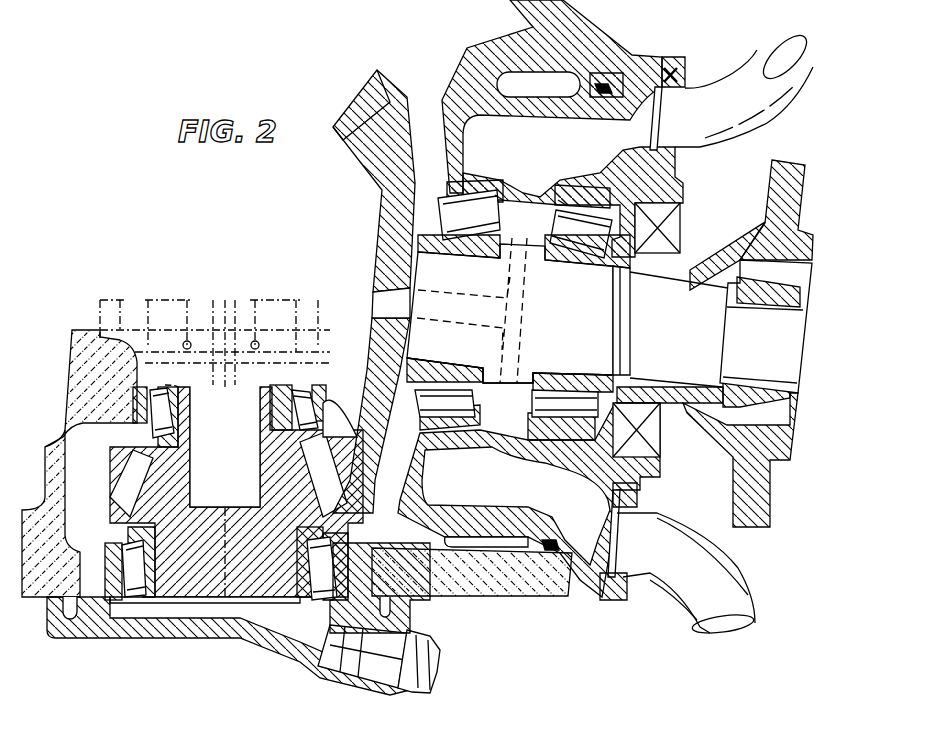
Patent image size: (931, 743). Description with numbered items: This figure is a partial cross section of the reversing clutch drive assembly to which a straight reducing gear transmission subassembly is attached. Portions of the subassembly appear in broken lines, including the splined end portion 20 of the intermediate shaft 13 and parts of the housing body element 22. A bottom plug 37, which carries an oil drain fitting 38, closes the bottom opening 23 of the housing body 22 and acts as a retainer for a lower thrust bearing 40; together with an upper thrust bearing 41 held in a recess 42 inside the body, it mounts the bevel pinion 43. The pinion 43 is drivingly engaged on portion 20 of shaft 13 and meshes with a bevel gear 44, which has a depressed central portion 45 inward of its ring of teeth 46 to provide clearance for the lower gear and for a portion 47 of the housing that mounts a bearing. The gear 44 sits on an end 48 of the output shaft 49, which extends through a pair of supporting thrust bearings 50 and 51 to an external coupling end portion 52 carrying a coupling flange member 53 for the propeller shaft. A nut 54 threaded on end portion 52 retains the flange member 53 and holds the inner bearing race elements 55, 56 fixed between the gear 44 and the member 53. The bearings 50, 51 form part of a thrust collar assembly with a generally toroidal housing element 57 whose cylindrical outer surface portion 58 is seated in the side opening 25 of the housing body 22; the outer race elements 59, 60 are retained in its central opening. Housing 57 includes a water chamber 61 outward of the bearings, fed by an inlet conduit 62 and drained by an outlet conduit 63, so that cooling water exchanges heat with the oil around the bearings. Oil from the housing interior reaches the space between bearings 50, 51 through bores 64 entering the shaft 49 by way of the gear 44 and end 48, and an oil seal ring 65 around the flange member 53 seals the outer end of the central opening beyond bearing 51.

The shaft 13 is at (175, 384).
The splined end portion 20 is at (190, 470).
The housing body element 22 is at (488, 598).
The bottom opening 23 is at (98, 552).
The side opening 25 is at (538, 540).
The bottom plug 37 is at (145, 642).
The oil drain fitting 38 is at (412, 632).
The lower thrust bearing 40 is at (340, 545).
The upper thrust bearing 41 is at (318, 433).
The recess 42 is at (140, 430).
The bevel pinion 43 is at (130, 470).
The bevel gear 44 is at (372, 480).
The depressed central portion 45 is at (378, 232).
The ring of teeth 46 is at (358, 98).
The portion of the housing 47 is at (340, 412).
The end of output shaft 48 is at (410, 348).
The output shaft 49 is at (410, 380).
The thrust bearing 50 is at (470, 197).
The thrust bearing 51 is at (600, 200).
The external coupling end portion 52 is at (695, 400).
The coupling flange member 53 is at (805, 195).
The nut 54 is at (800, 295).
The inner bearing race element 55 is at (438, 262).
The inner bearing race element 56 is at (600, 270).
The toroidal housing element 57 is at (655, 55).
The cylindrical outer surface portion 58 is at (608, 86).
The outer race element 59 is at (497, 195).
The outer race element 60 is at (562, 200).
The water chamber 61 is at (540, 298).
The inlet conduit 62 is at (712, 140).
The outlet conduit 63 is at (668, 535).
The bores 64 is at (372, 292).
The oil seal ring 65 is at (680, 230).